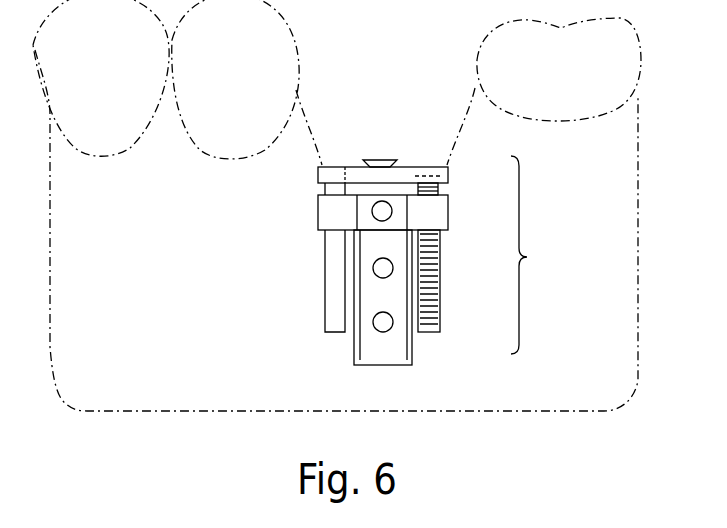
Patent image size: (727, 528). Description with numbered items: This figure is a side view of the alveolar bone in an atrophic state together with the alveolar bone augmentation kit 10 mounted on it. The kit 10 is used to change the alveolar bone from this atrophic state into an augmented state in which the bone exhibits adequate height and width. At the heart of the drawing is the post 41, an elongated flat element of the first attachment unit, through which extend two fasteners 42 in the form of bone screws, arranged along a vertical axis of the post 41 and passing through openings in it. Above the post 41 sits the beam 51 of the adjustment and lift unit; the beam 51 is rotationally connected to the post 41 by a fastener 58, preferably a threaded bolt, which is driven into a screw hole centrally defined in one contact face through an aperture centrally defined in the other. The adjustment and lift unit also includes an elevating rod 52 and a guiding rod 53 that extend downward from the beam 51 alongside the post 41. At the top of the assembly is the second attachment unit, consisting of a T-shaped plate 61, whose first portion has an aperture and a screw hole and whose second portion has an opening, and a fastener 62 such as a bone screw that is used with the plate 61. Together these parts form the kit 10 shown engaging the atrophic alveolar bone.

The alveolar bone augmentation kit 10 is at (540, 255).
The post 41 is at (392, 357).
The fastener 42 is at (373, 268).
The beam 51 is at (325, 214).
The elevating rod 52 is at (436, 277).
The guiding rod 53 is at (332, 296).
The fastener 58 is at (373, 207).
The plate 61 is at (446, 172).
The fastener 62 is at (381, 160).